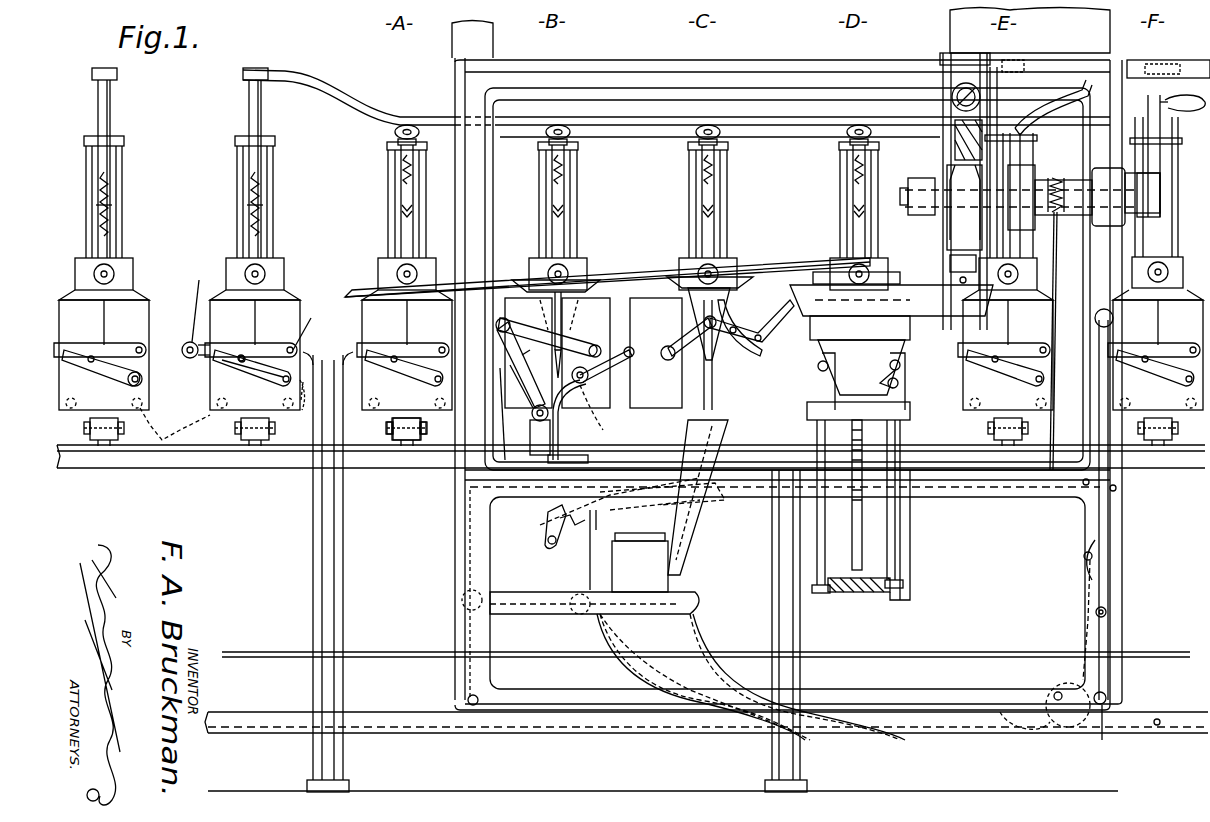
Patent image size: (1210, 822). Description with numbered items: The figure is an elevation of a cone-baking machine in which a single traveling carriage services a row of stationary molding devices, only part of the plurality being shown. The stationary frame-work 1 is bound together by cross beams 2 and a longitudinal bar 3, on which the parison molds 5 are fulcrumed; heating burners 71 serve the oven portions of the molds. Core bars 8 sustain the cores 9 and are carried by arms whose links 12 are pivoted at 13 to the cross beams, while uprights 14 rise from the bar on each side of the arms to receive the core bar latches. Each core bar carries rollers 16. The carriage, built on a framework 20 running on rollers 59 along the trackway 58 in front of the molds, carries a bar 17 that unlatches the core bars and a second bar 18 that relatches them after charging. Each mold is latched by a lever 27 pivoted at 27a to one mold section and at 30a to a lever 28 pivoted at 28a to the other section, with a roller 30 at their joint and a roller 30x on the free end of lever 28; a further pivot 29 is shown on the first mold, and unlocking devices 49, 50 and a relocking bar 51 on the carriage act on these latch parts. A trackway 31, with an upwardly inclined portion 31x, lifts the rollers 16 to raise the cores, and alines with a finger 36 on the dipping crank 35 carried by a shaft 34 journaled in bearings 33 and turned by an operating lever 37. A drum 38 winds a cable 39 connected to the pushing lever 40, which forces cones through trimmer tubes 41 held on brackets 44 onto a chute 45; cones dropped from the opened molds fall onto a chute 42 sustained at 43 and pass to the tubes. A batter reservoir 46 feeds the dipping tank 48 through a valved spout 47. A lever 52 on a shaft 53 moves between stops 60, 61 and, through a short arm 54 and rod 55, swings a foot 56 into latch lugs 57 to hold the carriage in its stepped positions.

The stationary frame-work 1 is at (343, 598).
The cross beams 2 is at (221, 468).
The longitudinal bar 3 is at (156, 358).
The parison molds 5 is at (780, 368).
The core bars 8 is at (380, 270).
The cores 9 is at (686, 290).
The links 12 is at (406, 463).
The pivot 13 is at (387, 440).
The uprights 14 is at (273, 194).
The rollers 16 is at (548, 262).
The bar 17 is at (300, 80).
The second bar 18 is at (1068, 112).
The framework 20 is at (570, 698).
The lever 27 is at (264, 343).
The pivot 27a is at (315, 325).
The lever 28 is at (258, 368).
The pivot 28a is at (241, 352).
The pivot 29 is at (141, 383).
The roller 30 is at (187, 342).
The pivot 30a is at (192, 304).
The roller 30x is at (140, 402).
The trackway 31 is at (770, 262).
The upwardly inclined portion of trackway 31x is at (612, 270).
The bearings 33 is at (990, 200).
The shaft 34 is at (975, 220).
The dipping crank 35 is at (918, 180).
The finger 36 is at (812, 262).
The operating lever 37 is at (1195, 112).
The drum 38 is at (1072, 215).
The cable 39 is at (1053, 330).
The pushing lever 40 is at (554, 550).
The trimmer tubes 41 is at (640, 562).
The chute 42 is at (685, 510).
The support 43 is at (730, 500).
The brackets 44 is at (680, 604).
The chute 45 is at (751, 677).
The batter reservoir 46 is at (955, 26).
The valved spout 47 is at (952, 60).
The dipping tank 48 is at (891, 436).
The parison mold unlocking device 49 is at (510, 385).
The parison mold unlocking device 50 is at (591, 405).
The mold relocking bar 51 is at (732, 323).
The lever 52 is at (1110, 518).
The shaft 53 is at (1108, 608).
The short arm 54 is at (1088, 612).
The rod 55 is at (1075, 690).
The foot 56 is at (1032, 725).
The latch lugs 57 is at (1155, 728).
The trackway 58 is at (430, 722).
The rollers 59 is at (1105, 734).
The stop 60 is at (1118, 488).
The stop 61 is at (1083, 486).
The heating burners 71 is at (175, 424).